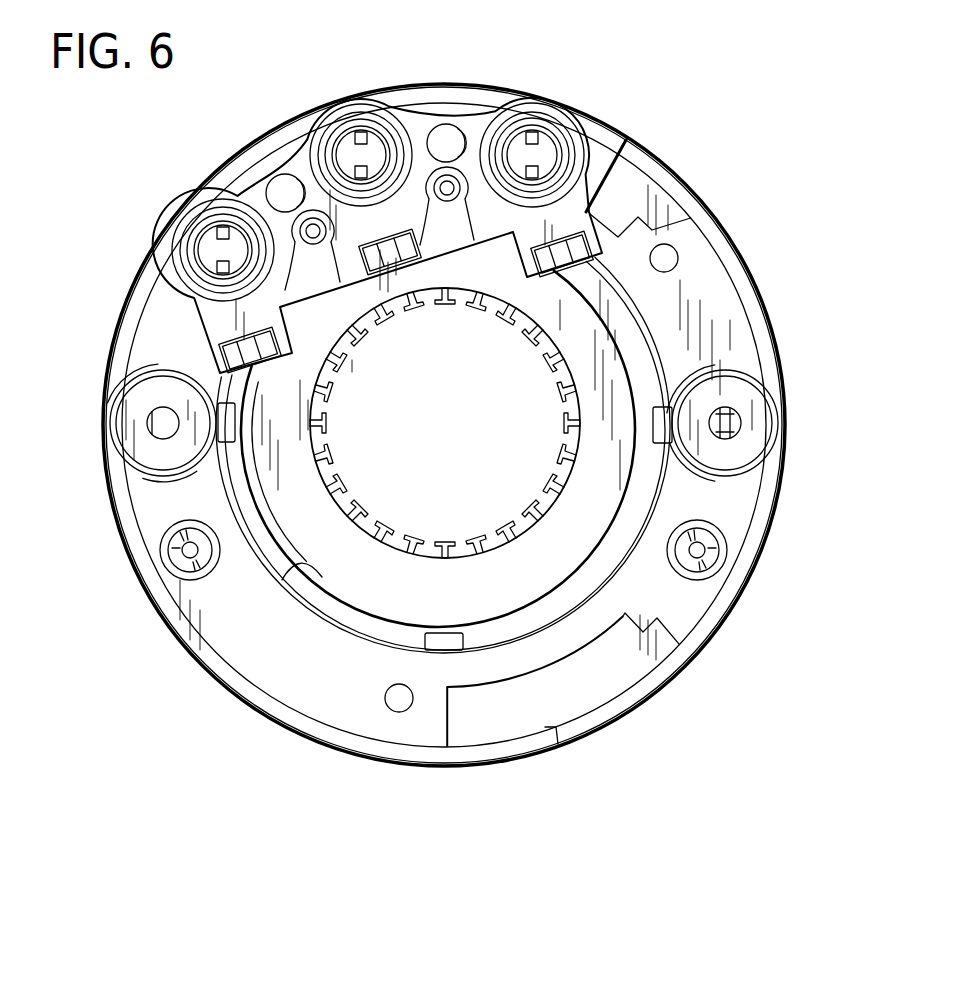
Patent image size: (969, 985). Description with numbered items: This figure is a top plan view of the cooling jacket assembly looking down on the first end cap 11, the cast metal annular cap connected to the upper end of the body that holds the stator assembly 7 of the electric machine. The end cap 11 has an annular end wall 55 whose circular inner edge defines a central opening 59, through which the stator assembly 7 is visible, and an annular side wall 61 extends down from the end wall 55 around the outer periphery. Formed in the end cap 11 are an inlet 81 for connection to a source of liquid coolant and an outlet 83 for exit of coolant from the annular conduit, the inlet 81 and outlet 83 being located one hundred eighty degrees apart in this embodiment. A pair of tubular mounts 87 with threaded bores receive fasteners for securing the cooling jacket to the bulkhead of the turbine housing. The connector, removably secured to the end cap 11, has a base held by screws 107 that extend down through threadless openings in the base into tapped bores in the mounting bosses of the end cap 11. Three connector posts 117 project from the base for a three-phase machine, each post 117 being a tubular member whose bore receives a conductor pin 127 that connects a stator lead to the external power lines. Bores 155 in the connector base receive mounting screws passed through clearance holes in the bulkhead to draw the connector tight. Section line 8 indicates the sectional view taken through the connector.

The first end cap 11 is at (735, 214).
The annular side wall 61 is at (313, 745).
The annular end wall 55 is at (200, 597).
The central opening 59 is at (315, 567).
The stator assembly 7 is at (697, 780).
The section line 8- 8 is at (557, 788).
The inlet 81 is at (128, 438).
The outlet 83 is at (745, 451).
The tubular mounts 87 is at (175, 542).
The connector posts 117 is at (183, 287).
The conductor pin 127 is at (222, 249).
The screws 107 is at (283, 189).
The bores 155 is at (300, 229).